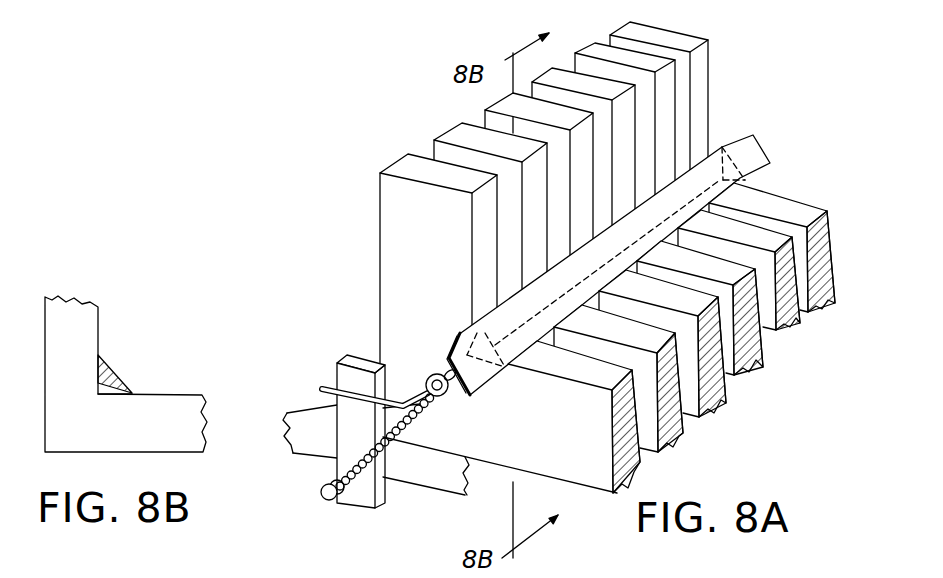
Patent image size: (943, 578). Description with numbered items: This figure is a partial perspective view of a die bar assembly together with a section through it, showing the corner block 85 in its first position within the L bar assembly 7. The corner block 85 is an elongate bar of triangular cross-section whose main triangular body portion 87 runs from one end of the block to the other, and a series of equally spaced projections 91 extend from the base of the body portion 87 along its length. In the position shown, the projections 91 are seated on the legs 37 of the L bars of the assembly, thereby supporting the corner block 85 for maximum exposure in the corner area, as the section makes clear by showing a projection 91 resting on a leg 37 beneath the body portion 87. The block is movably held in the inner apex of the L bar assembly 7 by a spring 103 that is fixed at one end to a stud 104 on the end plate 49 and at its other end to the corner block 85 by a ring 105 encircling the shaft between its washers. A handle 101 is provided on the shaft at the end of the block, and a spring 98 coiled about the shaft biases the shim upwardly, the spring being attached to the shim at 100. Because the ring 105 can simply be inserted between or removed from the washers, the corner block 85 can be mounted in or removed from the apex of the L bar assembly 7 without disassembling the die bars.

In FIG. 8A, the L bar assembly 7 is at (397, 117).
In FIG. 8A, the corner block 85 is at (719, 140).
In FIG. 8A, the L bar leg 37 is at (748, 245).
In FIG. 8B, the L bar leg 37 is at (172, 403).
In FIG. 8A, the end plate 49 is at (377, 506).
In FIG. 8A, the handle 101 is at (324, 386).
In FIG. 8A, the ring 105 is at (438, 376).
In FIG. 8A, the spring 98 is at (459, 383).
In FIG. 8A, the shim attachment 100 is at (446, 358).
In FIG. 8A, the spring 103 is at (407, 428).
In FIG. 8A, the stud 104 is at (329, 497).
In FIG. 8B, the main triangular body portion 87 is at (118, 378).
In FIG. 8B, the projection 91 is at (115, 388).